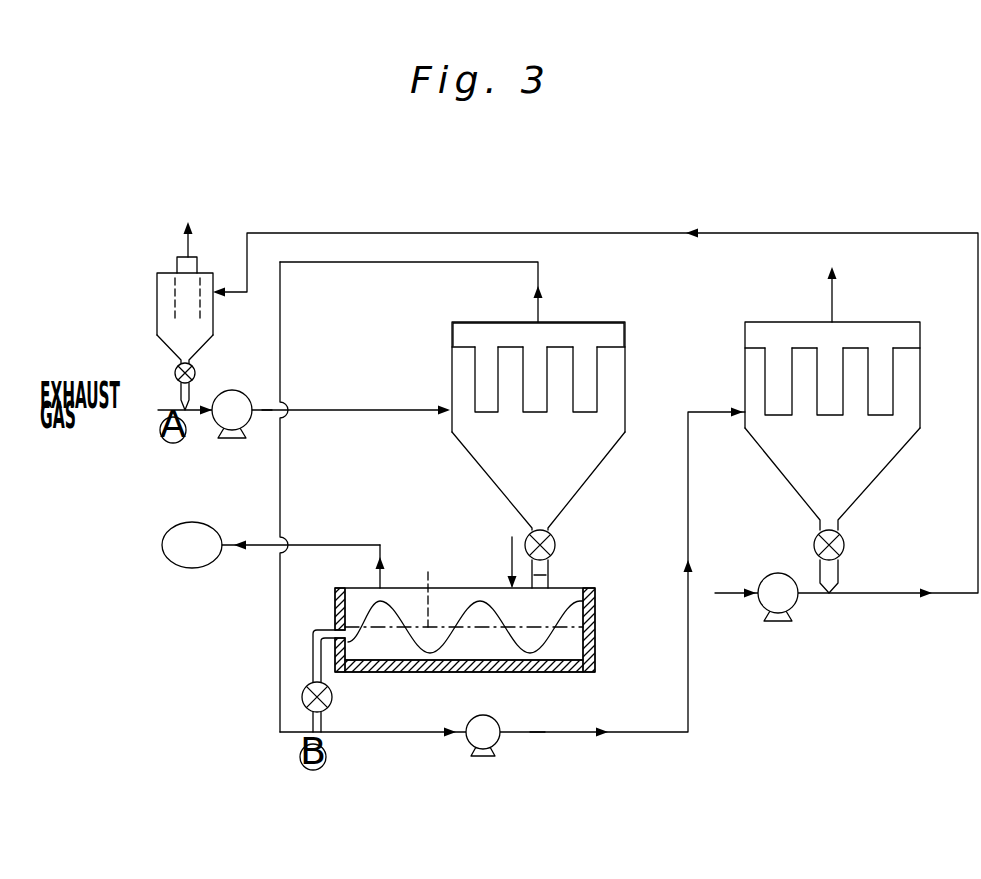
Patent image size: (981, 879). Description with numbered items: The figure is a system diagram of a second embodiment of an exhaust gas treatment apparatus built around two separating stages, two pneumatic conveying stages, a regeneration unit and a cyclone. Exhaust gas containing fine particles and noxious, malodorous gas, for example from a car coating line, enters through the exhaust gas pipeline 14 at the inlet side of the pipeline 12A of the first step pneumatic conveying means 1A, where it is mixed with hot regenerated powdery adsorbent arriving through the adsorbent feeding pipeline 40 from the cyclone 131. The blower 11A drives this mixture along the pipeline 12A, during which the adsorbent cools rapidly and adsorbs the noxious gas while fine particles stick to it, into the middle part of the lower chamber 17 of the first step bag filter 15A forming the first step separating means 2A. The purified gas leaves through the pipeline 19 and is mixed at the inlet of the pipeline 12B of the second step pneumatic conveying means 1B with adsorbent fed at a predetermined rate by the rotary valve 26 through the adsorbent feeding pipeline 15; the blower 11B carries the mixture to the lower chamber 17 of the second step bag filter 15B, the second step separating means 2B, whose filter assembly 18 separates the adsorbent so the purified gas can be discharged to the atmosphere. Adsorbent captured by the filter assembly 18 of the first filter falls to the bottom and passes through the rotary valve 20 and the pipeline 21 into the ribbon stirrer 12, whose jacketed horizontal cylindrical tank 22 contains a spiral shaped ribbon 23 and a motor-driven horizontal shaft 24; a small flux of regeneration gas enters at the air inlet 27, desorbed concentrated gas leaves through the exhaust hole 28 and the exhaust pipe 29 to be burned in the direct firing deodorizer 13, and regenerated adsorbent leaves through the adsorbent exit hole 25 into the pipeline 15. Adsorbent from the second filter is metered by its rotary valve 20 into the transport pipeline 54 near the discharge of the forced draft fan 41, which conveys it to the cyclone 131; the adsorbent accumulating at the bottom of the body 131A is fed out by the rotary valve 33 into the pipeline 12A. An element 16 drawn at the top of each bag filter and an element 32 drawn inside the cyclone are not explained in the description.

The cyclone 131 is at (203, 272).
The body of the cyclone 131A is at (157, 291).
The inner cylinder of cyclone 32 is at (183, 305).
The rotary valve 33 is at (203, 364).
The adsorbent feeding pipeline 40 is at (177, 380).
The transport pipeline 54 is at (561, 236).
The exhaust gas pipeline 14 is at (160, 413).
The blower 11A is at (222, 423).
The pipeline 12A is at (205, 407).
The first step pneumatic conveying means 1A is at (263, 424).
The pipeline 19 is at (407, 266).
The first step separating means 2A is at (700, 282).
The first step bag filter 15A is at (617, 300).
The clean gas chamber 16 is at (617, 333).
The filter assembly 18 is at (603, 381).
The lower chamber 17 is at (473, 439).
The rotary valve 20 is at (556, 540).
The pipeline 21 is at (552, 575).
The ribbon stirrer 12 is at (670, 526).
The air inlet 27 is at (503, 576).
The second step separating means 2B is at (854, 296).
The second step bag filter 15B is at (948, 284).
The pipeline 12B is at (395, 735).
The blower 11B is at (475, 743).
The second step pneumatic conveying means 1B is at (538, 746).
The forced draft fan 41 is at (792, 604).
The horizontal cylindrical tank 22 is at (597, 633).
The horizontal shaft 24 is at (464, 578).
The spiral shaped ribbon 23 is at (540, 648).
The exhaust hole 28 is at (384, 585).
The exhaust pipe 29 is at (312, 543).
The direct firing deodorizer 13 is at (190, 568).
The adsorbent exit hole 25 is at (333, 628).
The rotary valve 26 is at (332, 698).
The adsorbent feeding pipeline 15 is at (308, 721).